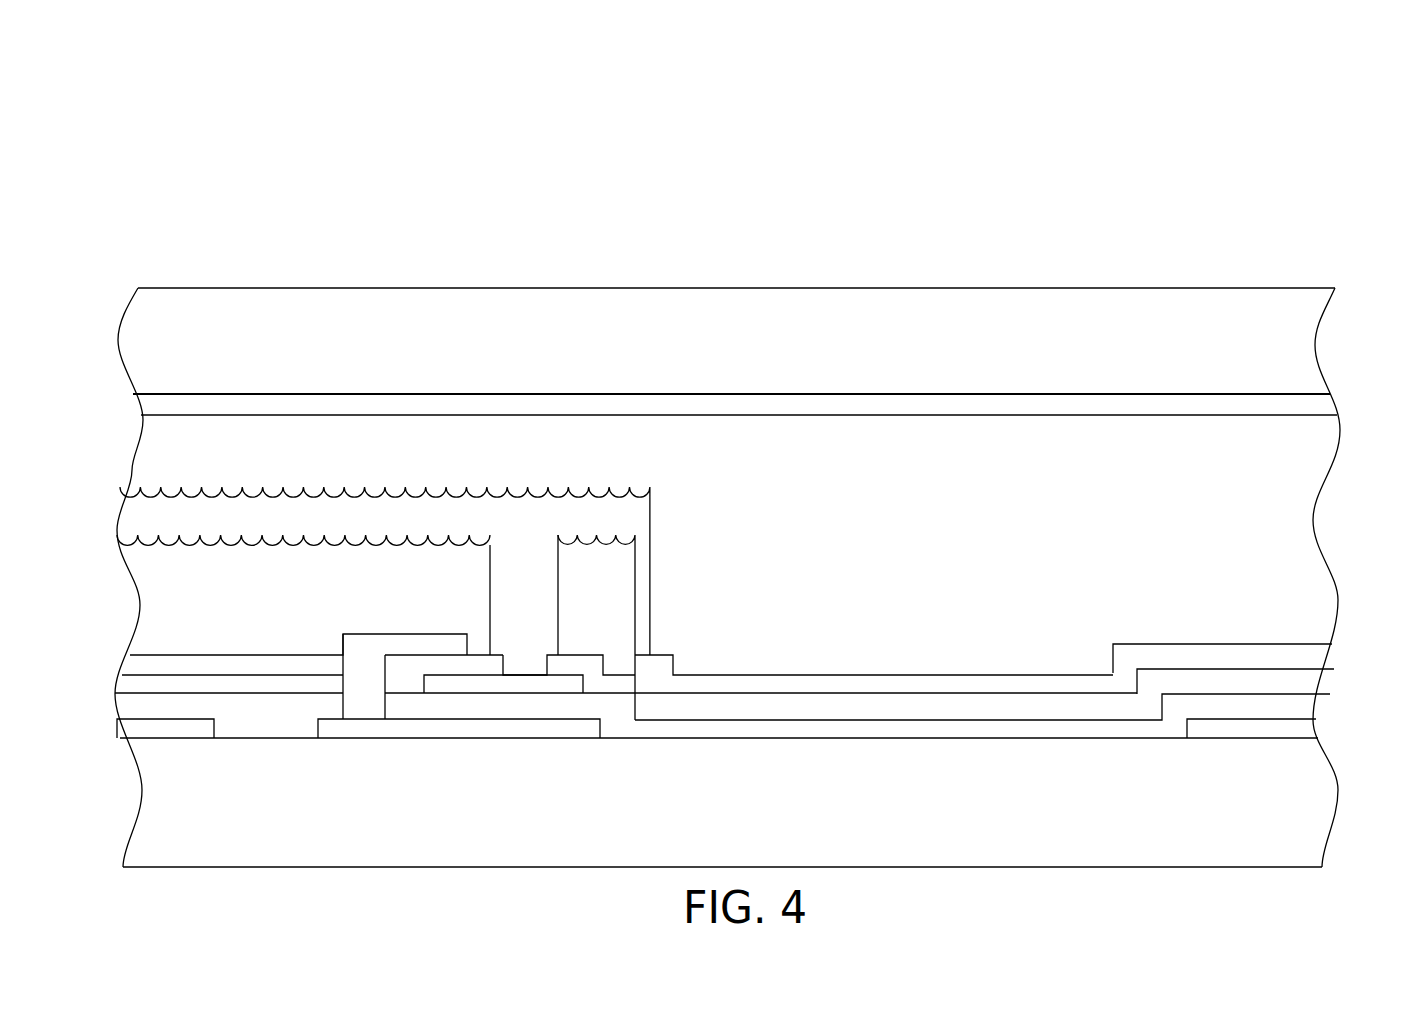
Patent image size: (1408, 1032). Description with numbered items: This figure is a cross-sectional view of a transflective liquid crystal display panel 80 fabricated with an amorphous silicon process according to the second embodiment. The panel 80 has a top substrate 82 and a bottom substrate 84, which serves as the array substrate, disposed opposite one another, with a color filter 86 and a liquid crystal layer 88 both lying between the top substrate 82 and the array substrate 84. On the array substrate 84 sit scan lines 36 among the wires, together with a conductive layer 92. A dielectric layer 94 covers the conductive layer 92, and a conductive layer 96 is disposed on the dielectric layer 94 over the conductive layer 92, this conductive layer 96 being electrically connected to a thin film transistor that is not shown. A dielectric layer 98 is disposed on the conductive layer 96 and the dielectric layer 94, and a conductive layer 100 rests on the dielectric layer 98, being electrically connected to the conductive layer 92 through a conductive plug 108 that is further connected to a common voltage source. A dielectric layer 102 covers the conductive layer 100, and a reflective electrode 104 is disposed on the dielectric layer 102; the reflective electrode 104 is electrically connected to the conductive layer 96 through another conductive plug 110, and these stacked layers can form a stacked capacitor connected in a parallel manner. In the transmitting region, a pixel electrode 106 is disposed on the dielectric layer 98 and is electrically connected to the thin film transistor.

The transflective liquid crystal display panel 80 is at (1186, 150).
The top substrate 82 is at (1295, 348).
The bottom substrate 84 is at (1320, 797).
The color filter 86 is at (1312, 408).
The liquid crystal layer 88 is at (1305, 560).
The scan line 36 is at (184, 735).
The conductive layer 92 is at (437, 726).
The dielectric layer 94 is at (262, 712).
The conductive layer 96 is at (523, 690).
The dielectric layer 98 is at (130, 685).
The conductive layer 100 is at (142, 660).
The dielectric layer 102 is at (143, 570).
The reflective electrode 104 is at (140, 502).
The pixel electrode 106 is at (1293, 652).
The conductive plug 108 is at (372, 703).
The conductive plug 110 is at (550, 627).